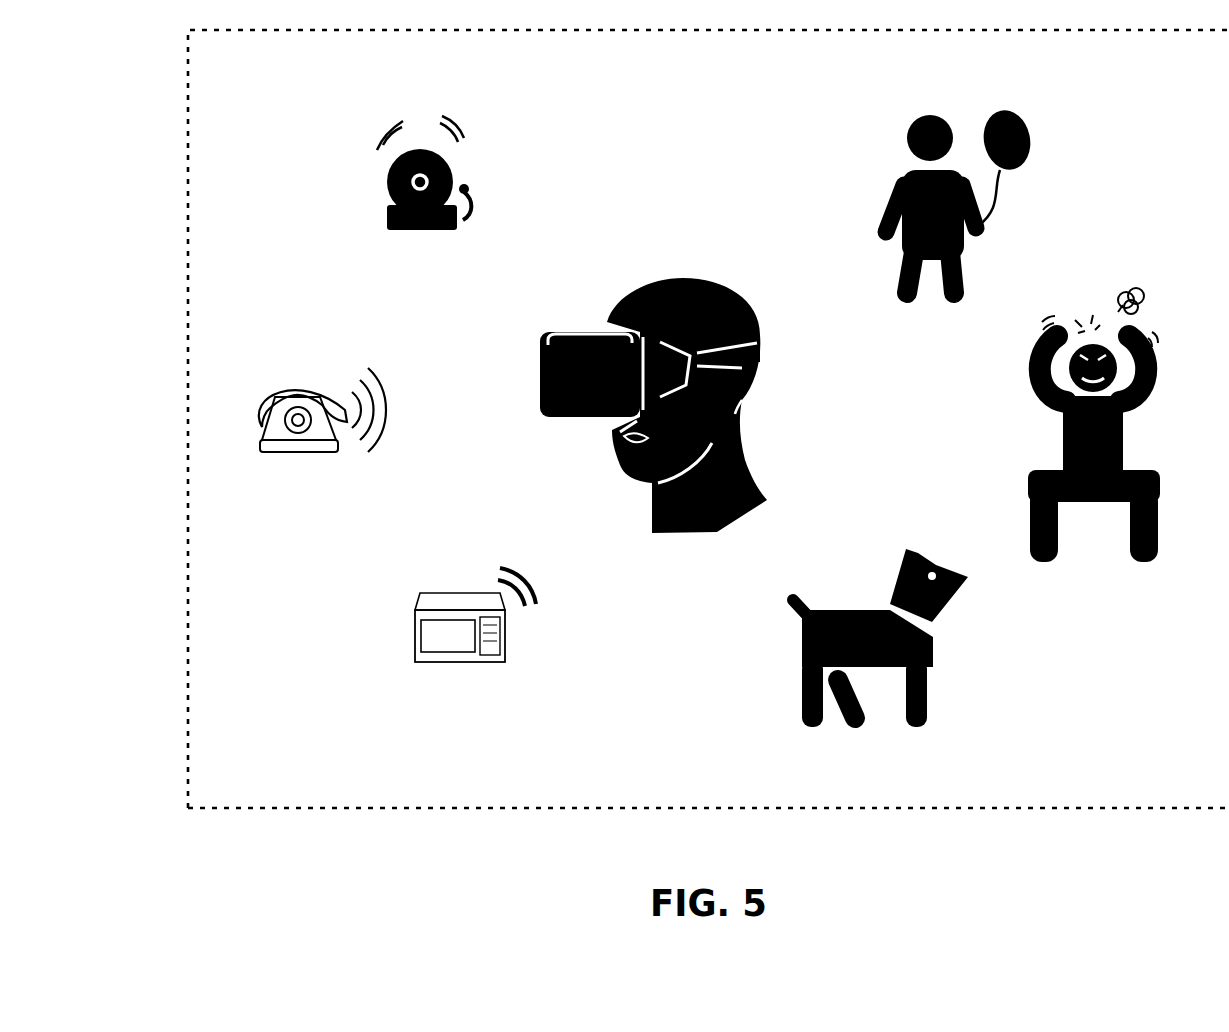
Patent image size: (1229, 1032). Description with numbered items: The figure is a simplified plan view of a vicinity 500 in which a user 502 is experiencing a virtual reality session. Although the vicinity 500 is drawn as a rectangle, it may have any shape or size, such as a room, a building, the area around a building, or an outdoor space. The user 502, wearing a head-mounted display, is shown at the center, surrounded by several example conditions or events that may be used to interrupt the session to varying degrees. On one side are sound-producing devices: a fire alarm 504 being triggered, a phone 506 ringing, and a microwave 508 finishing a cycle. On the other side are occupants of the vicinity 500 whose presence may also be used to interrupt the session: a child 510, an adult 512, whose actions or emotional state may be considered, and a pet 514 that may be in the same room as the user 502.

The vicinity 500 is at (187, 160).
The user 502 is at (680, 277).
The fire alarm 504 is at (388, 190).
The phone 506 is at (292, 385).
The microwave 508 is at (415, 630).
The child 510 is at (893, 188).
The adult 512 is at (1060, 438).
The pet 514 is at (933, 650).